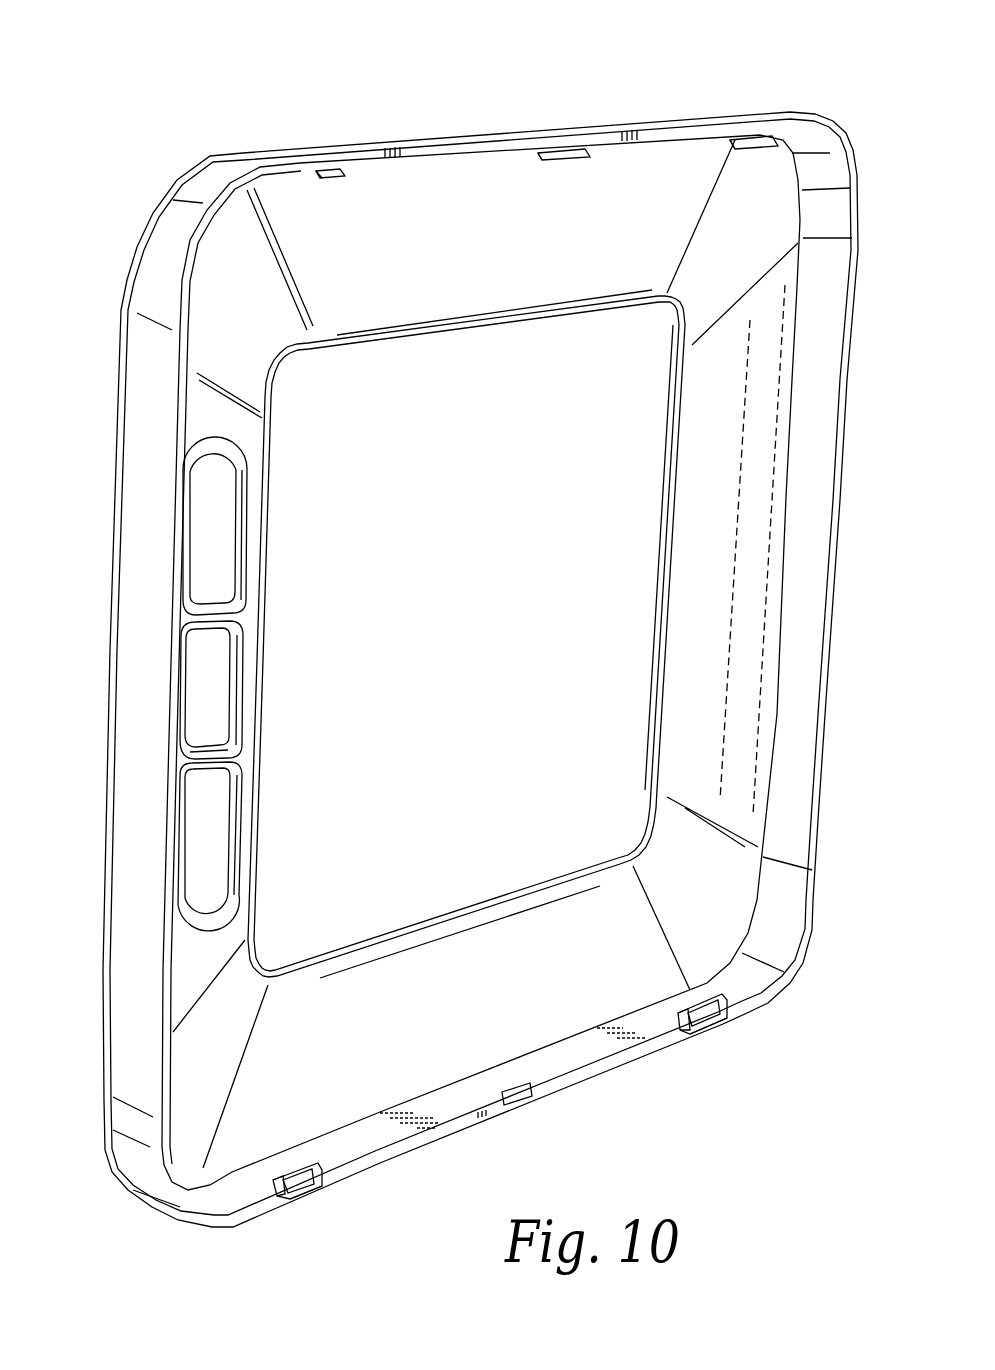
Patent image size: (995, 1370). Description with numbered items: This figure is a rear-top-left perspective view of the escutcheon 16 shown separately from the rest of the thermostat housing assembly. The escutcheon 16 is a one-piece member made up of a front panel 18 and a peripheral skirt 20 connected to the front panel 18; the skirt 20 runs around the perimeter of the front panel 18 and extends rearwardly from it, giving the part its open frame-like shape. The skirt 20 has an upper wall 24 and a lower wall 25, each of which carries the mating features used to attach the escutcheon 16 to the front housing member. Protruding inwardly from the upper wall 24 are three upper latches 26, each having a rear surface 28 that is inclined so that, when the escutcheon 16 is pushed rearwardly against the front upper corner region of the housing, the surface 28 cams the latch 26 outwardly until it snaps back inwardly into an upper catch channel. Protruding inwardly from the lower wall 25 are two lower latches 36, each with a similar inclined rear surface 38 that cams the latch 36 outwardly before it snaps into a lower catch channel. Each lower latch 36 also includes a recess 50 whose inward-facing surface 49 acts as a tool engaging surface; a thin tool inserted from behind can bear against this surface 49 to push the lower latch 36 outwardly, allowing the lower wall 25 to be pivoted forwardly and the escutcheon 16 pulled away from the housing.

The escutcheon 16 is at (177, 143).
The peripheral skirt 20 is at (163, 232).
The upper wall 24 is at (692, 118).
The upper latch 26 is at (356, 180).
The rear surface 28 is at (325, 178).
The lower latch 36 is at (290, 1165).
The rear surface 38 is at (310, 1177).
The inward-facing surface 49 is at (283, 1182).
The recess 50 is at (313, 1193).
The front panel 18 is at (423, 1017).
The lower wall 25 is at (565, 1052).